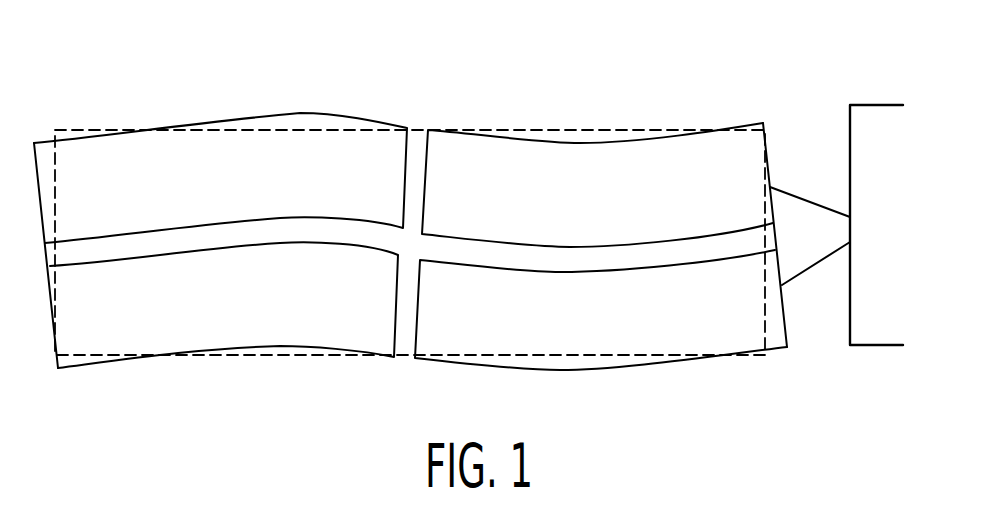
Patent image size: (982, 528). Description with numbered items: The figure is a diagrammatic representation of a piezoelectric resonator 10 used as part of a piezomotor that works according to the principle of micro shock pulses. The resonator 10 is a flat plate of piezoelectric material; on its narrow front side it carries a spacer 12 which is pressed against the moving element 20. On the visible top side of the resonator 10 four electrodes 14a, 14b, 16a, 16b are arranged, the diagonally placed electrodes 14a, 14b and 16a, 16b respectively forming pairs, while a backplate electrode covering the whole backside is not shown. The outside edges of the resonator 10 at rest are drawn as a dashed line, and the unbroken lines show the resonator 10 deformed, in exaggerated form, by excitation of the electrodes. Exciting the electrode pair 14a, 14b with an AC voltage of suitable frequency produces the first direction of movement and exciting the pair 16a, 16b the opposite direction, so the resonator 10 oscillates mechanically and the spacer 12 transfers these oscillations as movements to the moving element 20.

The piezoelectric resonator 10 is at (597, 368).
The spacer 12 is at (798, 262).
The electrode 14a is at (567, 210).
The electrode 14b is at (206, 328).
The electrode 16a is at (206, 200).
The electrode 16b is at (567, 327).
The moving element 20 is at (876, 104).